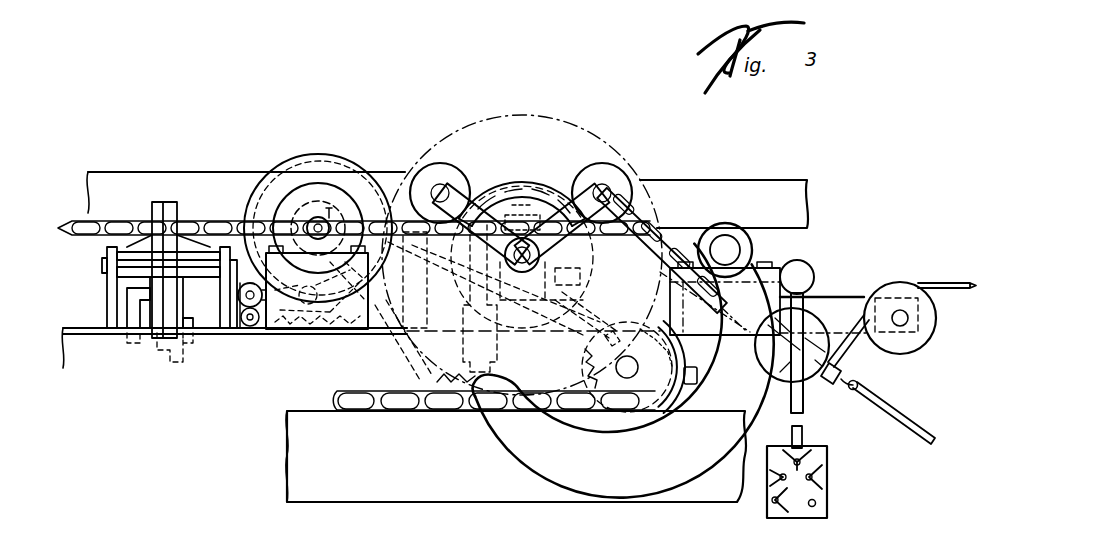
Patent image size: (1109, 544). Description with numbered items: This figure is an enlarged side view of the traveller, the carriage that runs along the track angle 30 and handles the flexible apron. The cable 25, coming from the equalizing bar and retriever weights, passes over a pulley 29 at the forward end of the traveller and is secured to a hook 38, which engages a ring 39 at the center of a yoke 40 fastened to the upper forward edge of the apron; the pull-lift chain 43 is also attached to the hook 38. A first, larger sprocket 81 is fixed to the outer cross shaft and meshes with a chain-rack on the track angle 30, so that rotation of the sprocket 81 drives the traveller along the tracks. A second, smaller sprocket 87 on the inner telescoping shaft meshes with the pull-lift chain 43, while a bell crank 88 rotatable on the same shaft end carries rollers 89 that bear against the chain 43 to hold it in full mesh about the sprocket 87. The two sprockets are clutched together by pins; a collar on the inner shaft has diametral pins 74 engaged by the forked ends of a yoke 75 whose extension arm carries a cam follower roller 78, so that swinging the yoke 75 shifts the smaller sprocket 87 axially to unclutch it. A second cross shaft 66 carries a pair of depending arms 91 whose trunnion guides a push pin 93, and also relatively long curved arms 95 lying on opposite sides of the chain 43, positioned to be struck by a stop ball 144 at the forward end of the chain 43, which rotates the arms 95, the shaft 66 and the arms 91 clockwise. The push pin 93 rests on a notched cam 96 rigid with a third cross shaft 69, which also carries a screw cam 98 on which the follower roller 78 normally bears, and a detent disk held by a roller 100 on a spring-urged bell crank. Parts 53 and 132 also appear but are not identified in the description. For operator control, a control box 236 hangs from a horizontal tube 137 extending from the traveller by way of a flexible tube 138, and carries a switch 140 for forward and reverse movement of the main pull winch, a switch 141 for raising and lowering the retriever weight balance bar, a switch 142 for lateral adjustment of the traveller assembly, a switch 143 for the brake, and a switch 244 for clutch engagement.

The cable 25 is at (946, 283).
The pulley 29 is at (893, 283).
The track angle 30 is at (292, 453).
The hook 38 is at (859, 386).
The ring 39 is at (853, 381).
The yoke 40 is at (894, 418).
The pull-lift chain 43 is at (648, 214).
The fixture frame 53 is at (212, 333).
The second cross shaft 66 is at (727, 250).
The third cross shaft 69 is at (319, 216).
The diametral pins 74 is at (536, 185).
The yoke 75 is at (490, 185).
The cam follower roller 78 is at (372, 180).
The first, larger sprocket 81 is at (598, 140).
The second, smaller sprocket 87 is at (590, 270).
The bell crank 88 is at (563, 200).
The rollers 89 is at (430, 168).
The depending arms 91 is at (700, 356).
The push pin 93 is at (590, 312).
The curved arms 95 is at (671, 438).
The notched cam 96 is at (298, 163).
The screw cam 98 is at (344, 165).
The roller 100 is at (298, 331).
The gear train 132 is at (342, 331).
The horizontal tube 137 is at (799, 263).
The flexible tube 138 is at (804, 405).
The switch 140 is at (803, 434).
The switch 141 is at (768, 478).
The switch 142 is at (820, 473).
The switch 143 is at (772, 505).
The stop ball 144 is at (810, 333).
The control box 236 is at (840, 473).
The switch 244 is at (816, 503).